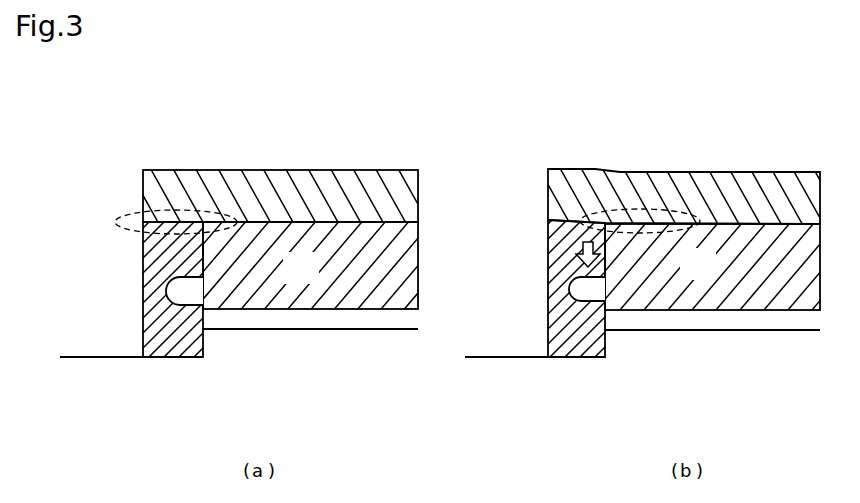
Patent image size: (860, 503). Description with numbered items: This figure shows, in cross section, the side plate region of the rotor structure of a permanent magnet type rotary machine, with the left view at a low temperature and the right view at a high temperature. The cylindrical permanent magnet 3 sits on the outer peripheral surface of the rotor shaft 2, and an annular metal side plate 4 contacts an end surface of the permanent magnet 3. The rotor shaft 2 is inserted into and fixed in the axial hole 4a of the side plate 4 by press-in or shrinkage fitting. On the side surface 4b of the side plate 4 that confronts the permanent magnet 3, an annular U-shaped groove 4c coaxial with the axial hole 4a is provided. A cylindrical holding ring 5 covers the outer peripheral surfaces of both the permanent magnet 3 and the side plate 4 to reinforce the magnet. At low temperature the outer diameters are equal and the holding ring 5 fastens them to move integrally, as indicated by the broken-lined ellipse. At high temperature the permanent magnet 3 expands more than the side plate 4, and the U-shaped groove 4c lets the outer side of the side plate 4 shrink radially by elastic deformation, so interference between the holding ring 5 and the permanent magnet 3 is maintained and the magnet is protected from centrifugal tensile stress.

The rotor shaft 2 is at (252, 400).
The permanent magnet 3 is at (310, 278).
The side plate 4 is at (143, 248).
The axial hole 4a is at (173, 357).
The side surface 4b is at (203, 257).
The U-shaped groove 4c is at (166, 290).
The holding ring 5 is at (330, 195).